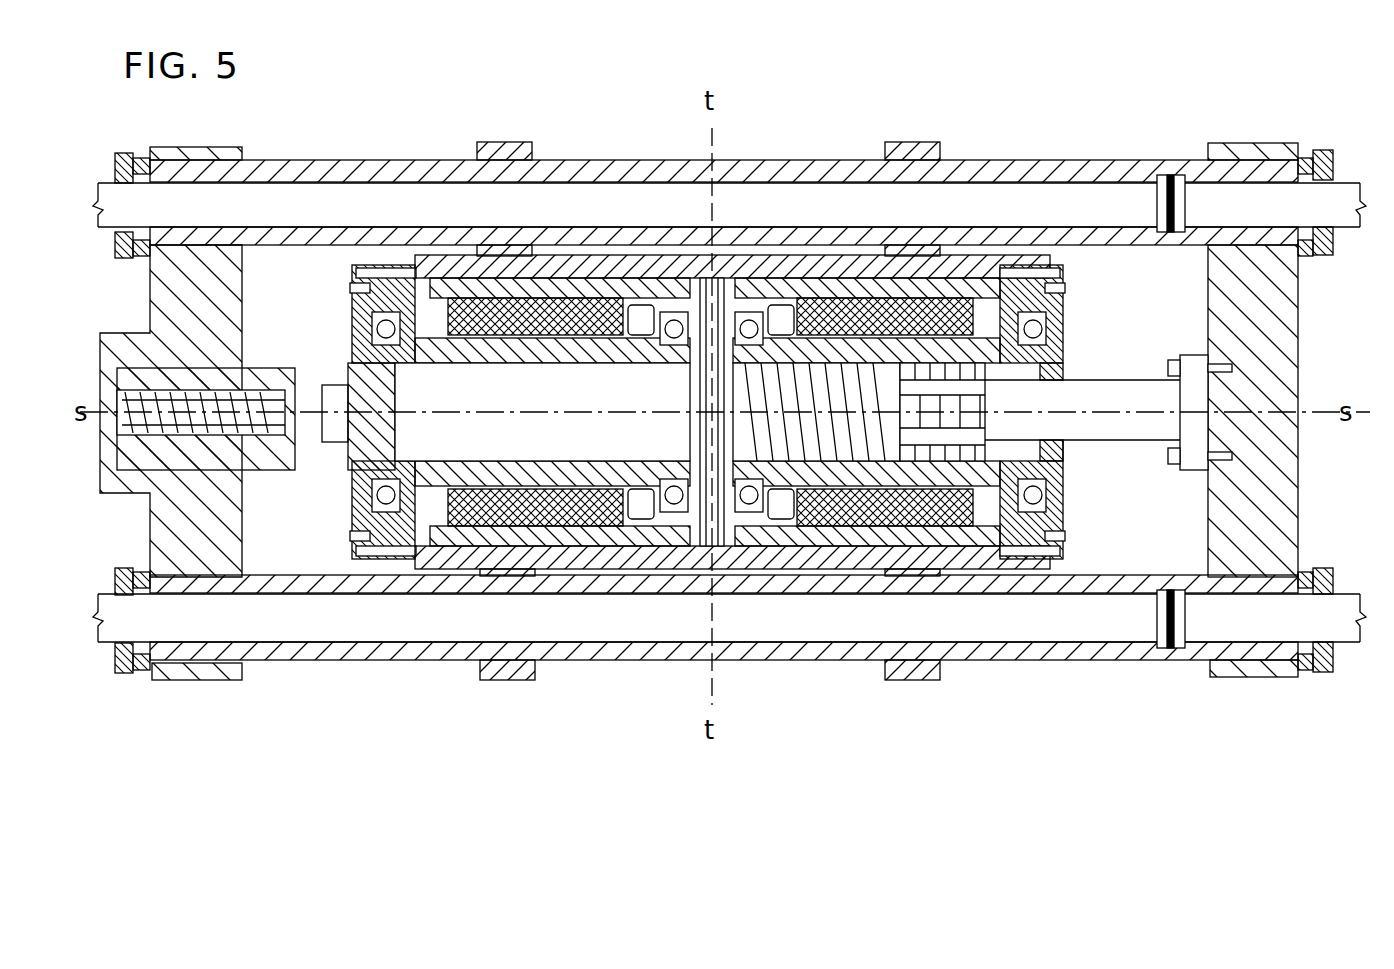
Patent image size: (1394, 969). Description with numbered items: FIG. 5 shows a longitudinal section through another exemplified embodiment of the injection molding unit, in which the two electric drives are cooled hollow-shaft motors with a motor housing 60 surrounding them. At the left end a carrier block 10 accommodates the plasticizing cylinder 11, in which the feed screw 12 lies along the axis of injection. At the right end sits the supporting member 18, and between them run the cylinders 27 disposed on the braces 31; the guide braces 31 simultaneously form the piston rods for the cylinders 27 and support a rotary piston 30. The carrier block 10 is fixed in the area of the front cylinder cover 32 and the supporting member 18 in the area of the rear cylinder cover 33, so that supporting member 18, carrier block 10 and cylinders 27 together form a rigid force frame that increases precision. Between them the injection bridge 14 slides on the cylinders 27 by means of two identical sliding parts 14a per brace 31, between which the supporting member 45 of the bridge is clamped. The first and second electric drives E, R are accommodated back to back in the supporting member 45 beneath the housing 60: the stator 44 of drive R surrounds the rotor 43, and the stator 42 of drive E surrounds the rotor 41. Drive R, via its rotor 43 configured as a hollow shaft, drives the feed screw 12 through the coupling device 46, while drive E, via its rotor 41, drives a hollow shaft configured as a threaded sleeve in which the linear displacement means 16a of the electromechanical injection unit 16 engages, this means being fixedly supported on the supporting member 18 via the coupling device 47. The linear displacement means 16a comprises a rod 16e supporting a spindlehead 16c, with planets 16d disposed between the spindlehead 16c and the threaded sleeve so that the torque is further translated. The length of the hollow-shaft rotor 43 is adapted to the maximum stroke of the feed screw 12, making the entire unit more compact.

The carrier block 10 is at (222, 150).
The plasticizing cylinder 11 is at (278, 372).
The feed screw 12 is at (255, 430).
The injection bridge 14 is at (913, 142).
The sliding parts 14a is at (505, 142).
The electromechanical injection unit 16 is at (1074, 306).
The linear displacement means 16a is at (1121, 456).
The spindlehead 16c is at (1060, 383).
The planets 16d is at (965, 436).
The rod 16e is at (1082, 410).
The supporting member 18 is at (1247, 150).
The cylinders 27 is at (570, 160).
The rotary piston 30 is at (1170, 175).
The braces 31 is at (283, 205).
The front cylinder cover 32 is at (120, 160).
The rear cylinder cover 33 is at (1320, 150).
The rotor 41 is at (730, 445).
The stator 42 is at (832, 526).
The rotor 43 is at (530, 484).
The stator 44 is at (588, 526).
The supporting member 45 is at (775, 569).
The coupling device 46 is at (336, 466).
The coupling device 47 is at (1193, 432).
The motor housing 60 is at (344, 258).
The second electric drive R is at (624, 276).
The first electric drive E is at (806, 276).